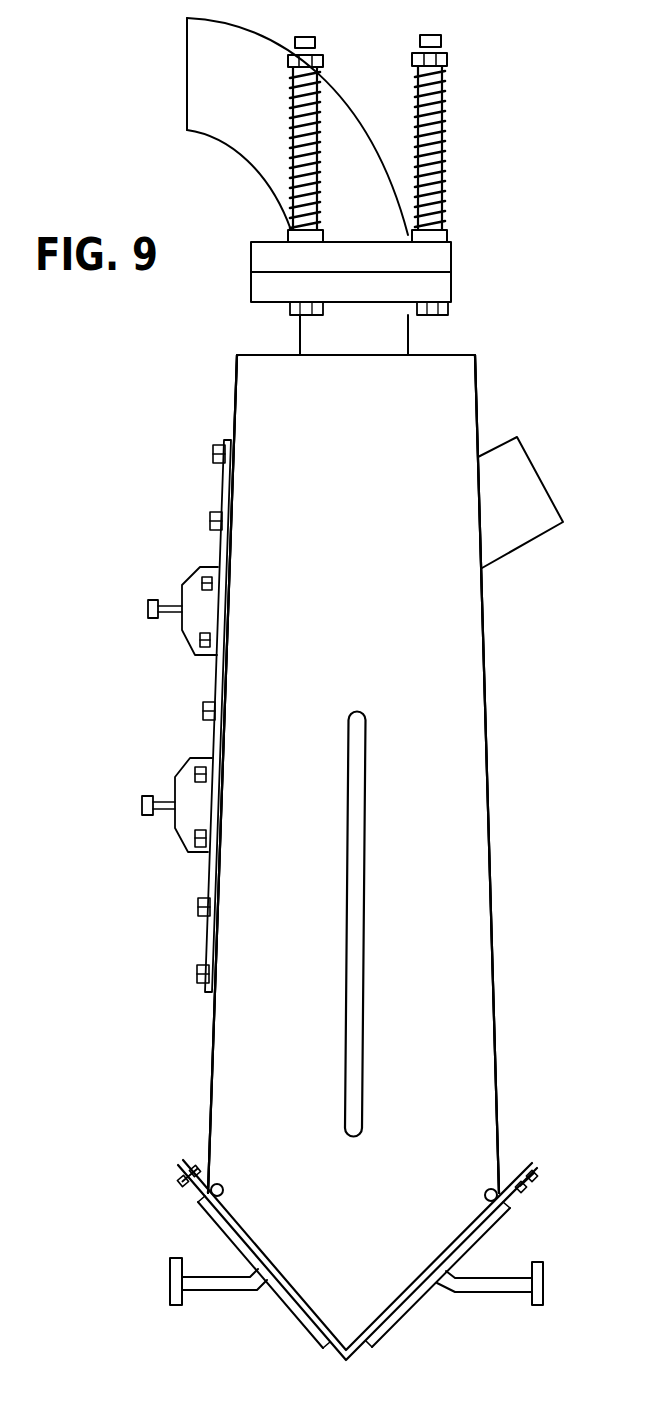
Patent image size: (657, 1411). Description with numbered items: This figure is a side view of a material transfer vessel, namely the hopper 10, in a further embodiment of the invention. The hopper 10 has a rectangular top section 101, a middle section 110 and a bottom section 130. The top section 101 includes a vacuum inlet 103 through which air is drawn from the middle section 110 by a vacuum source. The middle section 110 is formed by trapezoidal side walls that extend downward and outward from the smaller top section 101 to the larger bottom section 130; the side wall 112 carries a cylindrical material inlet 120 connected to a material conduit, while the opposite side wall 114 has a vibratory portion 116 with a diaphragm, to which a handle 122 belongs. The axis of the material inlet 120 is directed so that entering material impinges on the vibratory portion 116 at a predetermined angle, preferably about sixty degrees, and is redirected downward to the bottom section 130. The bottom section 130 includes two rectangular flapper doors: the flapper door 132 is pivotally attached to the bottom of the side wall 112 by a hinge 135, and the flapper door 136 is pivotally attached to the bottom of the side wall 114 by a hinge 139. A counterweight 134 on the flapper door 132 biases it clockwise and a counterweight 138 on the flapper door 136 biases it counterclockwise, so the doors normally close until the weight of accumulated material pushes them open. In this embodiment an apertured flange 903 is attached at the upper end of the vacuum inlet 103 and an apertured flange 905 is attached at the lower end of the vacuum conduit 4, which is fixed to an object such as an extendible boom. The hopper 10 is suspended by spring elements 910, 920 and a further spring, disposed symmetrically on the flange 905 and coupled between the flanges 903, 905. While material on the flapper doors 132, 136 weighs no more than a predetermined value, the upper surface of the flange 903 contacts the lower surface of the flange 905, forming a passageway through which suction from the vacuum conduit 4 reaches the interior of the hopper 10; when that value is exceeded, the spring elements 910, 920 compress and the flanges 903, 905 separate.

The vacuum conduit 4 is at (187, 70).
The spring element 910 is at (293, 117).
The spring element 920 is at (447, 126).
The apertured flange 905 is at (452, 263).
The apertured flange 903 is at (452, 291).
The top section 101 is at (270, 353).
The vacuum inlet 103 is at (409, 338).
The hopper 10 is at (563, 691).
The middle section 110 is at (366, 653).
The side wall 114 is at (236, 390).
The side wall 112 is at (488, 793).
The vibratory portion 116 is at (223, 485).
The material inlet 120 is at (537, 468).
The handle 122 is at (347, 877).
The bottom section 130 is at (386, 1249).
The flapper door 136 is at (287, 1305).
The flapper door 132 is at (498, 1233).
The hinge 139 is at (224, 1190).
The hinge 135 is at (485, 1195).
The counterweight 138 is at (175, 1306).
The counterweight 134 is at (538, 1306).